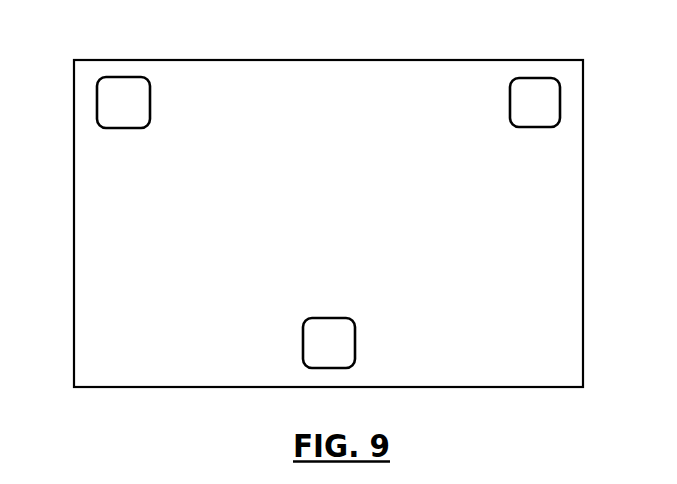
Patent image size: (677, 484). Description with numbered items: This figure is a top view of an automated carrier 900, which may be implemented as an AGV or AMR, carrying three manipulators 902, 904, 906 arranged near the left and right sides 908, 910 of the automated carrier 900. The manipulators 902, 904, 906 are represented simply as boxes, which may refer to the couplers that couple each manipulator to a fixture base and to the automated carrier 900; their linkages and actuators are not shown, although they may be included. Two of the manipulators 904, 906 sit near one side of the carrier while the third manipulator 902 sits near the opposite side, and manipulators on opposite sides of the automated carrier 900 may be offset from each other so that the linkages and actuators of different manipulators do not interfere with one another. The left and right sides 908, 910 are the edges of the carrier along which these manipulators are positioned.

The automated carrier 900 is at (583, 60).
The manipulator 902 is at (355, 338).
The manipulator 904 is at (150, 102).
The manipulator 906 is at (560, 102).
The left side 908 is at (453, 387).
The right side 910 is at (283, 60).